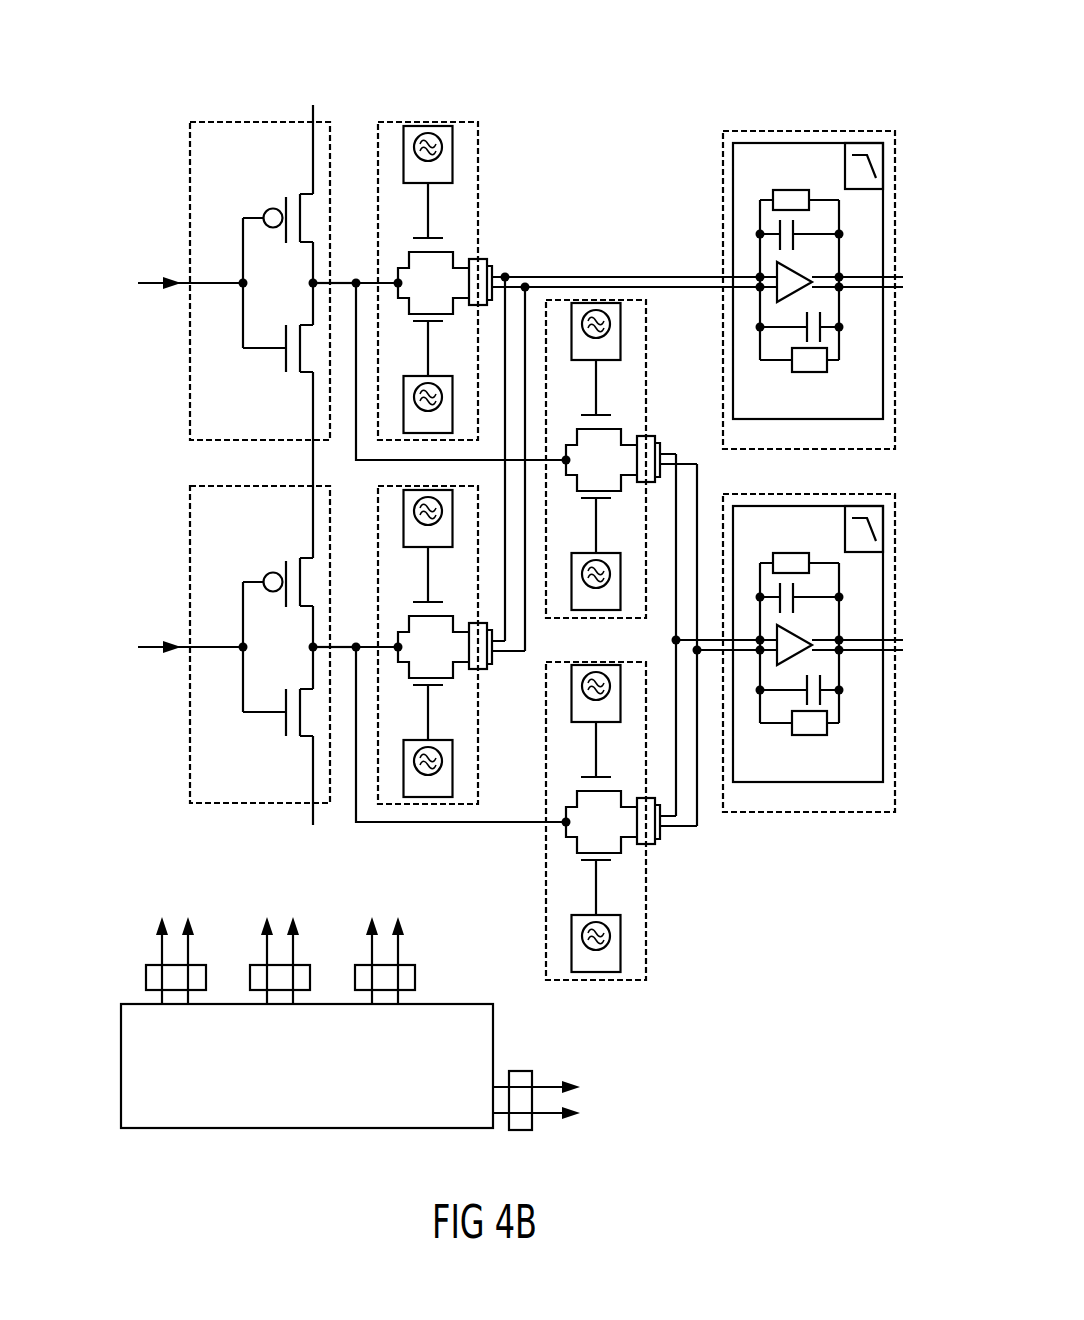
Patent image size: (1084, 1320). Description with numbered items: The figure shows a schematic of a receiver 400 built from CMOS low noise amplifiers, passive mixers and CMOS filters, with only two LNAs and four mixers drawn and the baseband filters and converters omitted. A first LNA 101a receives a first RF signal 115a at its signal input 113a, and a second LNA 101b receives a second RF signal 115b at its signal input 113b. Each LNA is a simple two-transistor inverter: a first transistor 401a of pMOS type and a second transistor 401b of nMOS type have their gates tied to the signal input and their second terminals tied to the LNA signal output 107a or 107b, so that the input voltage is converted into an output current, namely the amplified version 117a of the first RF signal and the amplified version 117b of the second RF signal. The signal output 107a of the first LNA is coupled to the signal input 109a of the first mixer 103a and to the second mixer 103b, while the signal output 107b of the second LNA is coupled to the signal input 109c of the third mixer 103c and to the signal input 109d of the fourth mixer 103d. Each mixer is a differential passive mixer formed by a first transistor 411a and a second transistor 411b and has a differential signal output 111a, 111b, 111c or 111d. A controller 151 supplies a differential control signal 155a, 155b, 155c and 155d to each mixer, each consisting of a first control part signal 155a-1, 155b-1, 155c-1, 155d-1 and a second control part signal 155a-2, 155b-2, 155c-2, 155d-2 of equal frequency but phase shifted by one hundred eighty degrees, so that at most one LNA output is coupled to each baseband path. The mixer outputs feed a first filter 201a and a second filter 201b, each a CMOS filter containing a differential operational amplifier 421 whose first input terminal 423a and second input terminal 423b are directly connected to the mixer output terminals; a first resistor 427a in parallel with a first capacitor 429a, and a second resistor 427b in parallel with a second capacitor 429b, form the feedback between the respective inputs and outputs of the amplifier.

The receiver 400 is at (855, 65).
The first low noise amplifier 101a is at (188, 168).
The second low noise amplifier 101b is at (188, 532).
The first RF signal 115a is at (145, 281).
The second RF signal 115b is at (145, 645).
The signal input of the first LNA 113a is at (190, 287).
The signal input of the second LNA 113b is at (190, 651).
The first transistor 401a is at (300, 215).
The second transistor 401b is at (298, 338).
The signal output of the first LNA 107a is at (324, 275).
The signal output of the second LNA 107b is at (324, 639).
The amplified version of the first RF signal 117a is at (343, 287).
The amplified version of the second RF signal 117b is at (343, 651).
The signal input of the first mixer 109a is at (355, 282).
The signal input of the third mixer 109c is at (355, 646).
The signal input of the fourth mixer 109d is at (565, 462).
The first mixer 103a is at (478, 166).
The second mixer 103b is at (648, 398).
The third mixer 103c is at (482, 742).
The fourth mixer 103d is at (652, 952).
The first transistor of the mixer 411a is at (516, 537).
The second transistor of the mixer 411b is at (518, 568).
The signal output of the first mixer 111a is at (478, 260).
The signal output of the second mixer 111b is at (648, 437).
The signal output of the third mixer 111c is at (487, 669).
The signal output of the fourth mixer 111d is at (656, 845).
The first control part signal 155a-1 is at (428, 231).
The second control part signal 155a-2 is at (428, 334).
The first control part signal 155b-1 is at (596, 408).
The second control part signal 155b-2 is at (596, 512).
The first control part signal 155c-1 is at (428, 596).
The second control part signal 155c-2 is at (428, 700).
The first control part signal 155d-1 is at (596, 772).
The second control part signal 155d-2 is at (596, 874).
The first control signal 155a is at (146, 980).
The second control signal 155b is at (250, 980).
The third control signal 155c is at (355, 980).
The fourth control signal 155d is at (517, 1071).
The controller 151 is at (310, 1129).
The first filter 201a is at (723, 170).
The second filter 201b is at (815, 812).
The differential operational amplifier 421 is at (812, 282).
The first input terminal 423a is at (758, 276).
The second input terminal 423b is at (758, 288).
The first resistor 427a is at (797, 190).
The second resistor 427b is at (810, 372).
The first capacitor 429a is at (796, 226).
The second capacitor 429b is at (803, 341).